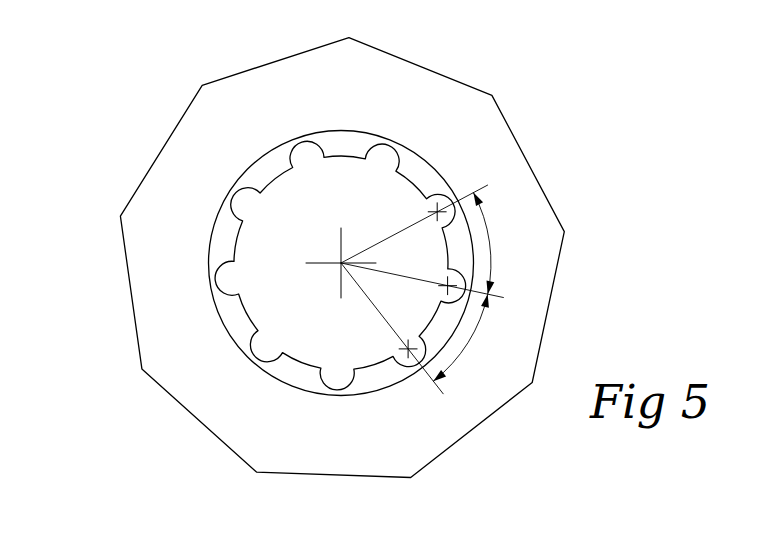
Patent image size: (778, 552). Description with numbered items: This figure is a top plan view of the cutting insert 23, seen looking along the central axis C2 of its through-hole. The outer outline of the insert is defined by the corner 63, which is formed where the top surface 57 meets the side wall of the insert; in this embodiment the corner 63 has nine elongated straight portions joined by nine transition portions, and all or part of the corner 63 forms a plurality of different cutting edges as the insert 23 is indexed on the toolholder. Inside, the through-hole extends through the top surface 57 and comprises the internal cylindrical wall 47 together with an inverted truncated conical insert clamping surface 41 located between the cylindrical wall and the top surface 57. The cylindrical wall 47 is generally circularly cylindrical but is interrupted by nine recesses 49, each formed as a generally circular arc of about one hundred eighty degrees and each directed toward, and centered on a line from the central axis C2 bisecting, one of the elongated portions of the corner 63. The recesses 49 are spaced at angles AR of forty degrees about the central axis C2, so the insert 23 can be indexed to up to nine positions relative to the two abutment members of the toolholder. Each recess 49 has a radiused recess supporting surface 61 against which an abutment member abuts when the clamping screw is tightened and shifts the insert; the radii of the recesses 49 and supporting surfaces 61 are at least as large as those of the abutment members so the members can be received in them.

The cutting insert 23 is at (140, 111).
The insert clamping surface 41 is at (294, 372).
The internal cylindrical wall 47 is at (268, 313).
The recesses 49 is at (242, 210).
The top surface 57 is at (322, 435).
The recess supporting surfaces 61 is at (450, 218).
The corner 63 is at (343, 477).
The central axis of the through-hole C2 is at (341, 263).
The angles between recesses AR is at (434, 289).